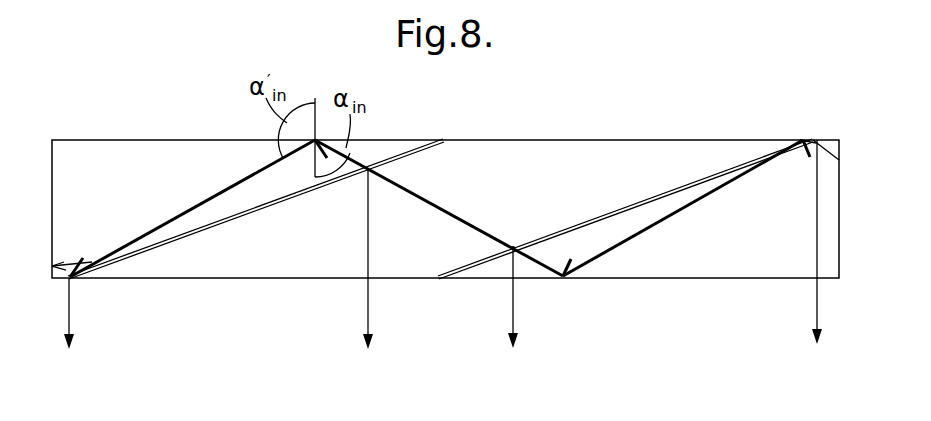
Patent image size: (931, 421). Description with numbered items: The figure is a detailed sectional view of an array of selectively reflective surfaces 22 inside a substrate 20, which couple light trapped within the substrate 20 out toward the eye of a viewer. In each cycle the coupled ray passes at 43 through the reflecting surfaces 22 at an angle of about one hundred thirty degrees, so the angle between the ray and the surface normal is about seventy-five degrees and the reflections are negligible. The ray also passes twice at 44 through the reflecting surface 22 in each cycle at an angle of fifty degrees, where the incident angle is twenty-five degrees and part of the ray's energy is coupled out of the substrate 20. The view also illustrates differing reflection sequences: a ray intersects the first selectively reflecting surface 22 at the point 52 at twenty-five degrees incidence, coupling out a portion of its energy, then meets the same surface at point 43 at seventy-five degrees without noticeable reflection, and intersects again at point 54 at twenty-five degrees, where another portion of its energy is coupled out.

The substrate 20 is at (304, 244).
The selectively reflective surfaces 22 is at (412, 153).
The passing point 43 is at (100, 262).
The passing point 44 is at (369, 172).
The intersection point 52 is at (812, 140).
The intersection point 54 is at (513, 248).